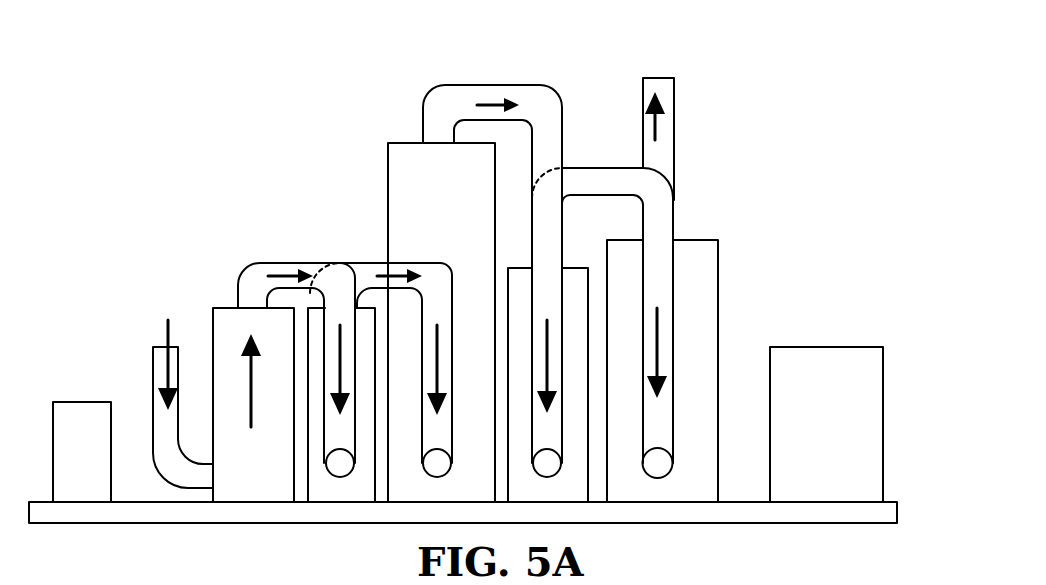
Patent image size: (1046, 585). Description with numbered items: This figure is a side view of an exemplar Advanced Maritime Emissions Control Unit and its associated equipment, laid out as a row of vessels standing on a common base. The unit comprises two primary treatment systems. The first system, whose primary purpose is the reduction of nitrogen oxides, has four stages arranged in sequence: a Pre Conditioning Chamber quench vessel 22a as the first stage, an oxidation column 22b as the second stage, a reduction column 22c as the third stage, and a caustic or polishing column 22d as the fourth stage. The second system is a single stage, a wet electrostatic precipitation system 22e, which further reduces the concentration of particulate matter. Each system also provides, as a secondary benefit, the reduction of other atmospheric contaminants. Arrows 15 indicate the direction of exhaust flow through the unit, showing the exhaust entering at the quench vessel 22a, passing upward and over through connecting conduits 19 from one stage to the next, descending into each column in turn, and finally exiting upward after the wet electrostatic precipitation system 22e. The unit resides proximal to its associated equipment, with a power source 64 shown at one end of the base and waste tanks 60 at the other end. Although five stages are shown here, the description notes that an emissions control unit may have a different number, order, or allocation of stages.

The arrows 15 is at (165, 332).
The arched transfer conduits 19 is at (433, 117).
The Pre Conditioning Chamber quench vessel 22a is at (232, 330).
The oxidation column 22b is at (313, 330).
The reduction column 22c is at (412, 187).
The caustic column 22d is at (572, 293).
The wet electrostatic precipitation system 22e is at (700, 262).
The waste tanks 60 is at (810, 377).
The power source 64 is at (92, 418).